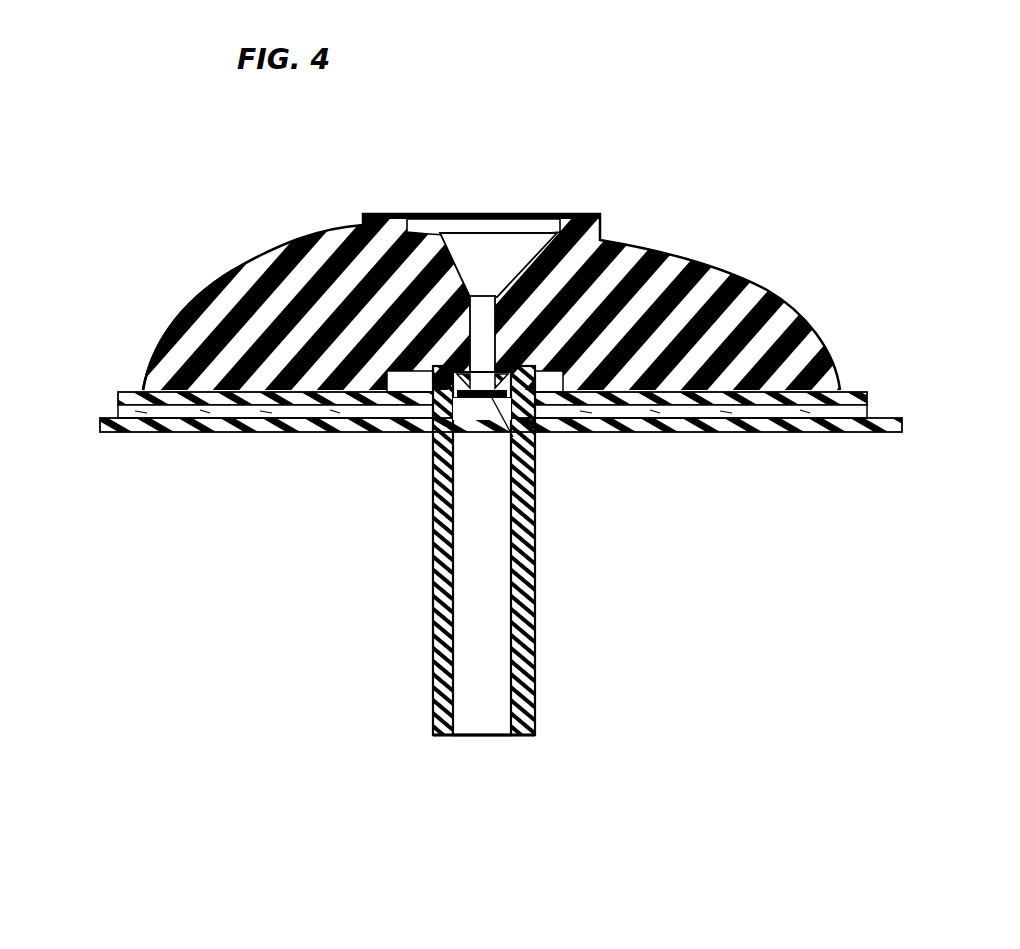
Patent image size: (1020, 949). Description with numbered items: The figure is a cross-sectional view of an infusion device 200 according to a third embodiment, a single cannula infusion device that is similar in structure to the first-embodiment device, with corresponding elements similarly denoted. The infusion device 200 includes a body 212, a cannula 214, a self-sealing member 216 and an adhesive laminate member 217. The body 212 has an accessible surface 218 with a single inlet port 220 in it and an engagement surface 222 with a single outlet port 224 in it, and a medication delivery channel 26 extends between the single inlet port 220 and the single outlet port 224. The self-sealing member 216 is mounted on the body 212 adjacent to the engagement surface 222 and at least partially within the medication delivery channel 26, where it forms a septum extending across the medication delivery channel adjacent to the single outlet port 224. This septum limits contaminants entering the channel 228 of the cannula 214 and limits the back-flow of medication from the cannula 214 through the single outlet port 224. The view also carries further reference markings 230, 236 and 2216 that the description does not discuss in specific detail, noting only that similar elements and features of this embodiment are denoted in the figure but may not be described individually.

The infusion device 200 is at (273, 194).
The body 212 is at (745, 265).
The cannula 214 is at (563, 550).
The self-sealing member 216 is at (533, 467).
The adhesive laminate member 217 is at (471, 444).
The accessible surface 218 is at (250, 278).
The single inlet port 220 is at (462, 212).
The engagement surface 222 is at (196, 372).
The single outlet port 224 is at (489, 422).
The medication delivery channel 26 is at (508, 300).
The channel 228 is at (473, 723).
The central channel 230 is at (483, 300).
The top plate 236 is at (378, 214).
The conical inlet 2216 is at (532, 236).